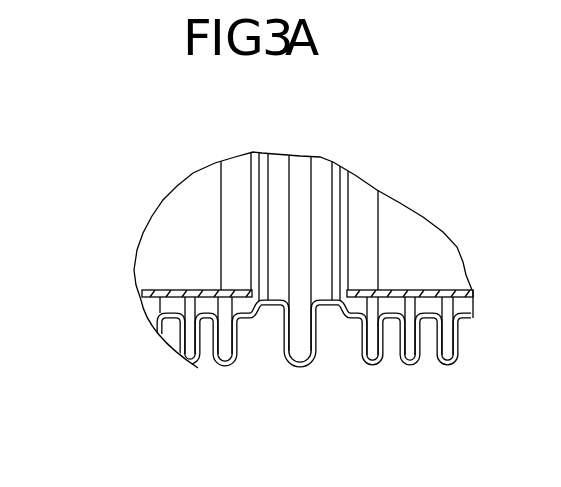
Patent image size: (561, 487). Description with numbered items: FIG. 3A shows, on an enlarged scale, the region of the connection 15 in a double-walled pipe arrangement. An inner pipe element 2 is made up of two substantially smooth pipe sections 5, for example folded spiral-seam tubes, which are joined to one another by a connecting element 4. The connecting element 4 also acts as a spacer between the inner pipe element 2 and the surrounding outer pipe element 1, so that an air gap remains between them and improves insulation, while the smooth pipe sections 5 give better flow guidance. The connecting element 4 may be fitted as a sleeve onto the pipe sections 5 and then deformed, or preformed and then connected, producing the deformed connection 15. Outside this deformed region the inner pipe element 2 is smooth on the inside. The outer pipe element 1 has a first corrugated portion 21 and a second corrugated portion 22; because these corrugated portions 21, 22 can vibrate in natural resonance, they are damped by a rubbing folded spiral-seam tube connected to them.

The outer pipe element 1 is at (462, 343).
The inner pipe element 2 is at (126, 297).
The connecting element 4 is at (347, 282).
The pipe section 5 is at (174, 290).
The connection 15 is at (301, 378).
The first corrugated portion 21 is at (195, 367).
The second corrugated portion 22 is at (410, 367).